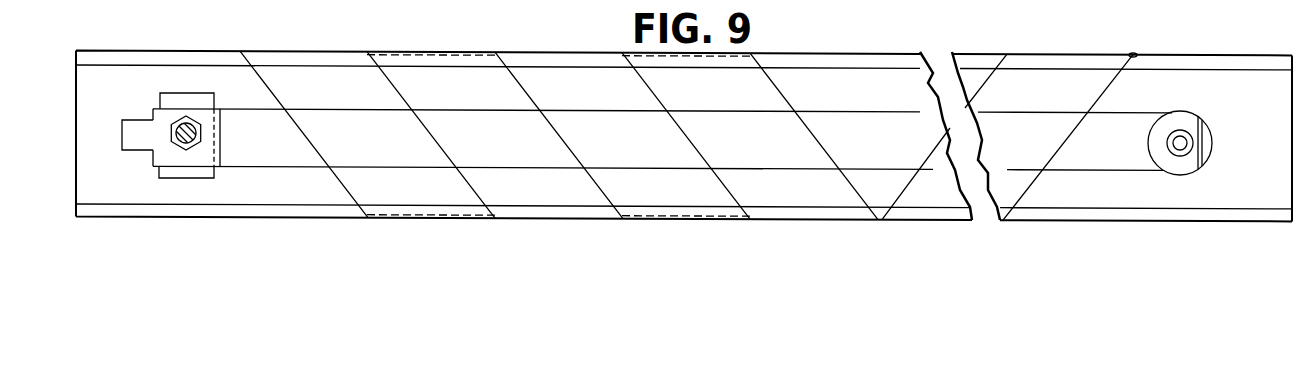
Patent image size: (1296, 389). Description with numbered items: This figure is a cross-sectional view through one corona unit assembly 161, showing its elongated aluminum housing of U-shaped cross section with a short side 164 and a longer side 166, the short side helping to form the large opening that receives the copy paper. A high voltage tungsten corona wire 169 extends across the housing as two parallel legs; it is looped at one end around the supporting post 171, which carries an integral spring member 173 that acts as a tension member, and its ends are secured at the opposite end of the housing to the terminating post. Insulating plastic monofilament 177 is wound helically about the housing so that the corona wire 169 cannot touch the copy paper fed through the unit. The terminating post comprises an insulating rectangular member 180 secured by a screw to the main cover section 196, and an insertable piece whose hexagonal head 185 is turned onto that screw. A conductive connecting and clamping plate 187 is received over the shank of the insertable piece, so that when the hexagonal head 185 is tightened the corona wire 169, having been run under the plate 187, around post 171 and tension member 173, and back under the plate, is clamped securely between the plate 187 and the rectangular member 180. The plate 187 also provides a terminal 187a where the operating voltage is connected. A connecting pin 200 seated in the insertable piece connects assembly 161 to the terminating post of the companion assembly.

The corona unit assembly 161 is at (1257, 172).
The short side of housing 164 is at (1187, 217).
The long side of housing 166 is at (1248, 68).
The corona wire 169 is at (866, 110).
The supporting post 171 is at (1158, 135).
The spring member 173 is at (1208, 145).
The insulating plastic monofilament 177 is at (402, 91).
The rectangular member 180 is at (160, 93).
The hexagonal head 185 is at (197, 140).
The connecting and clamping plate 187 is at (162, 125).
The terminal 187a is at (122, 133).
The main cover section 196 is at (642, 146).
The connecting pin 200 is at (188, 142).